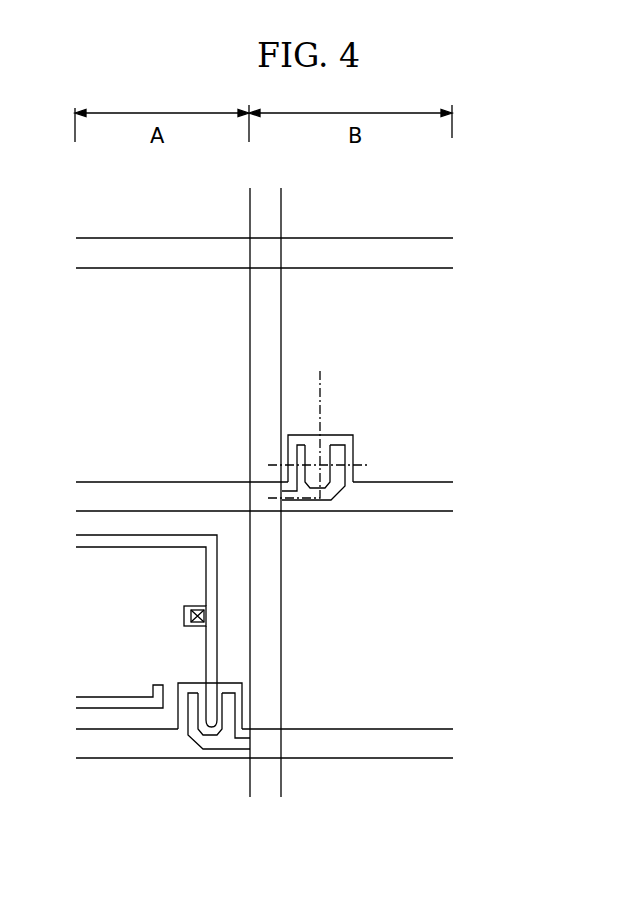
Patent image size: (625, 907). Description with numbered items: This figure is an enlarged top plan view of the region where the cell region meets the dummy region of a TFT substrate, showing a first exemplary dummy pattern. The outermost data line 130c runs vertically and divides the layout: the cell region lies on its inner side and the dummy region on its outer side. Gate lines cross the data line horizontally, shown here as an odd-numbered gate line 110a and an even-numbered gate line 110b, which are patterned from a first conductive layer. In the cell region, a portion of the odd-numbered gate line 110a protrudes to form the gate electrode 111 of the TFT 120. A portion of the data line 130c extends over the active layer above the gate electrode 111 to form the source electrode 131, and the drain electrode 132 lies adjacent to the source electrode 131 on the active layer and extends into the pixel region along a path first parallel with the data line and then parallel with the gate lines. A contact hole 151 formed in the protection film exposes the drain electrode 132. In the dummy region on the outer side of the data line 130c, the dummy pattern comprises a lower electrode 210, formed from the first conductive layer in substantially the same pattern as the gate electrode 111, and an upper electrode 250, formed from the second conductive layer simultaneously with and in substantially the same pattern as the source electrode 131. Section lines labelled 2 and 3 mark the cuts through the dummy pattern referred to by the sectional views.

The outermost data line 130c is at (264, 210).
The odd-numbered gate line 110a is at (440, 744).
The even-numbered gate line 110b is at (440, 497).
The upper electrode 250 is at (302, 452).
The lower electrode 210 is at (349, 480).
The TFT 120 is at (85, 617).
The drain electrode 132 is at (209, 635).
The source electrode 131 is at (195, 693).
The gate electrode 111 is at (178, 702).
The contact hole 151 is at (192, 604).
The section line 2-2' 2 is at (294, 428).
The section line 3-3' 3 is at (322, 466).